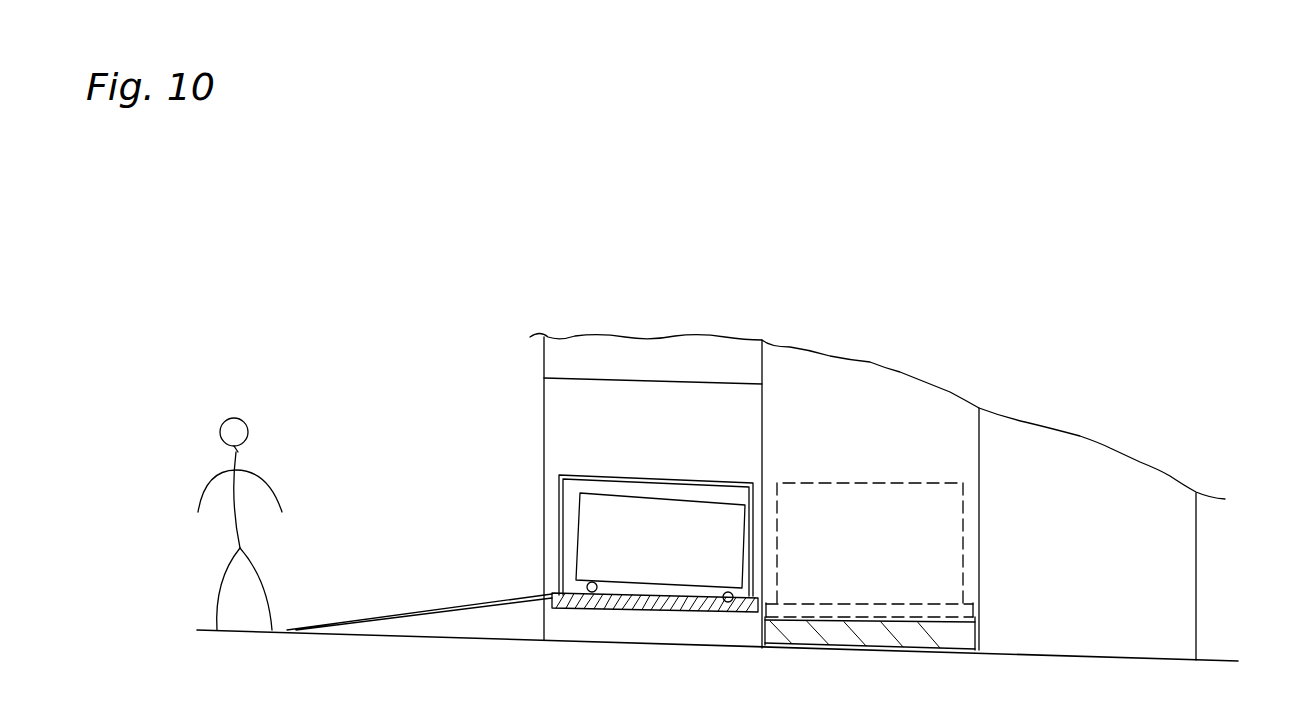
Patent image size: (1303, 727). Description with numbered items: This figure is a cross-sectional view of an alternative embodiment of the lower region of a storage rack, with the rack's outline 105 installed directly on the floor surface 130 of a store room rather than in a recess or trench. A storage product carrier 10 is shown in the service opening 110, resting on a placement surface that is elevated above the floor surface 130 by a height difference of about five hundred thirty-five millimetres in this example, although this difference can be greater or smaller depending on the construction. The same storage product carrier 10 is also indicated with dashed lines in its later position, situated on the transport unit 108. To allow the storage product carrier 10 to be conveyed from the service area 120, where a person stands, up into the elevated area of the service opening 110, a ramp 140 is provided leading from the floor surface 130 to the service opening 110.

The storage product carrier 10 is at (558, 590).
The building 105 is at (868, 380).
The transport unit 108 is at (792, 635).
The service opening 110 is at (565, 415).
The service area 120 is at (390, 530).
The floor surface 130 is at (287, 628).
The ramp 140 is at (447, 605).